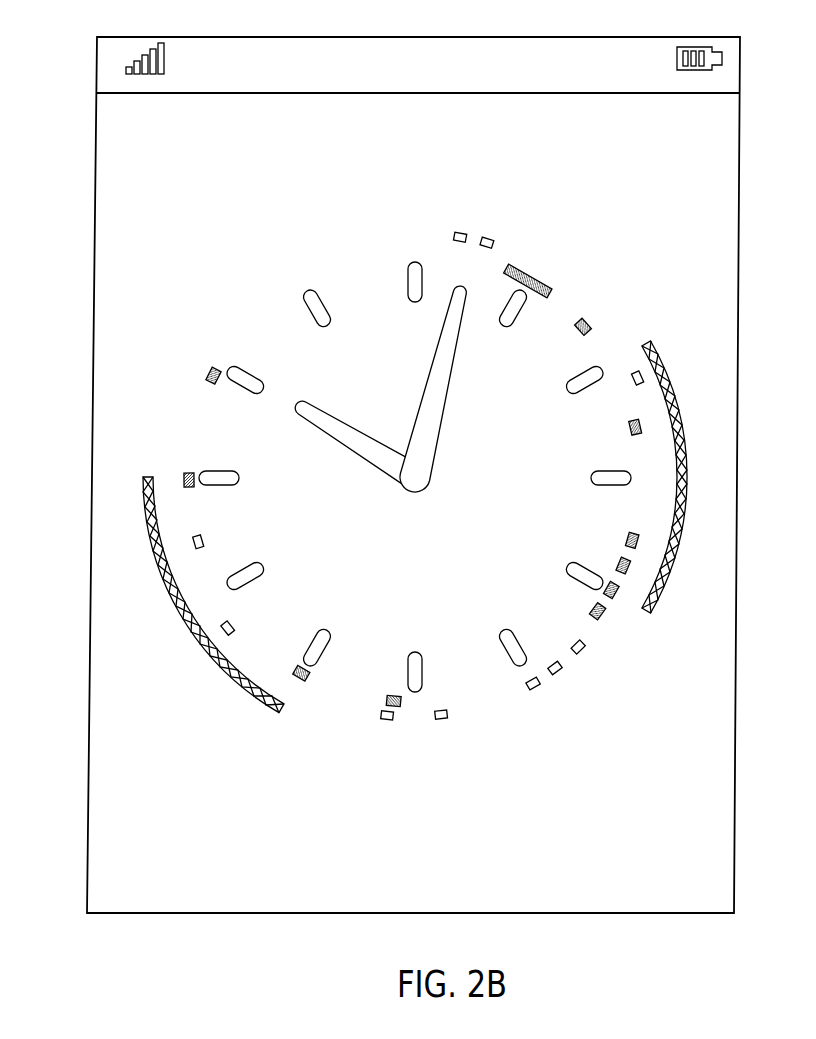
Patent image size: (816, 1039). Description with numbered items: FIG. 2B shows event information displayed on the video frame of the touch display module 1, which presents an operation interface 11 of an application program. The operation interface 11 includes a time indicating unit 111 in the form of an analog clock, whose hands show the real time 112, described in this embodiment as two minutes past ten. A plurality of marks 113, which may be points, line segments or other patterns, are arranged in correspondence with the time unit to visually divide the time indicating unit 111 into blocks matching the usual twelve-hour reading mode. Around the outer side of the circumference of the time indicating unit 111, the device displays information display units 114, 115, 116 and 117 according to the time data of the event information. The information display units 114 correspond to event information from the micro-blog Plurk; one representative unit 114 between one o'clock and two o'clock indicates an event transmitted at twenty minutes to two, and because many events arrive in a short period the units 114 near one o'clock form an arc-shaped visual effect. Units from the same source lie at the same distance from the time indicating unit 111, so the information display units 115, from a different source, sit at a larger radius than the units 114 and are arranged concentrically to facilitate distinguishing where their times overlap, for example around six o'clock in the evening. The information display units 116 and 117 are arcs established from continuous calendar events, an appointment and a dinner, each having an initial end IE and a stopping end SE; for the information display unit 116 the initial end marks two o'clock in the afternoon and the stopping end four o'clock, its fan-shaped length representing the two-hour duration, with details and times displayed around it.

The touch display module 1 is at (741, 105).
The operation interface 11 is at (713, 172).
The time indicating unit 111 is at (275, 271).
The real time 112 is at (457, 302).
The marks 113 is at (510, 662).
The information display unit 114 is at (530, 275).
The information display unit 115 is at (462, 232).
The information display unit 116 is at (678, 548).
The information display unit 117 is at (157, 540).